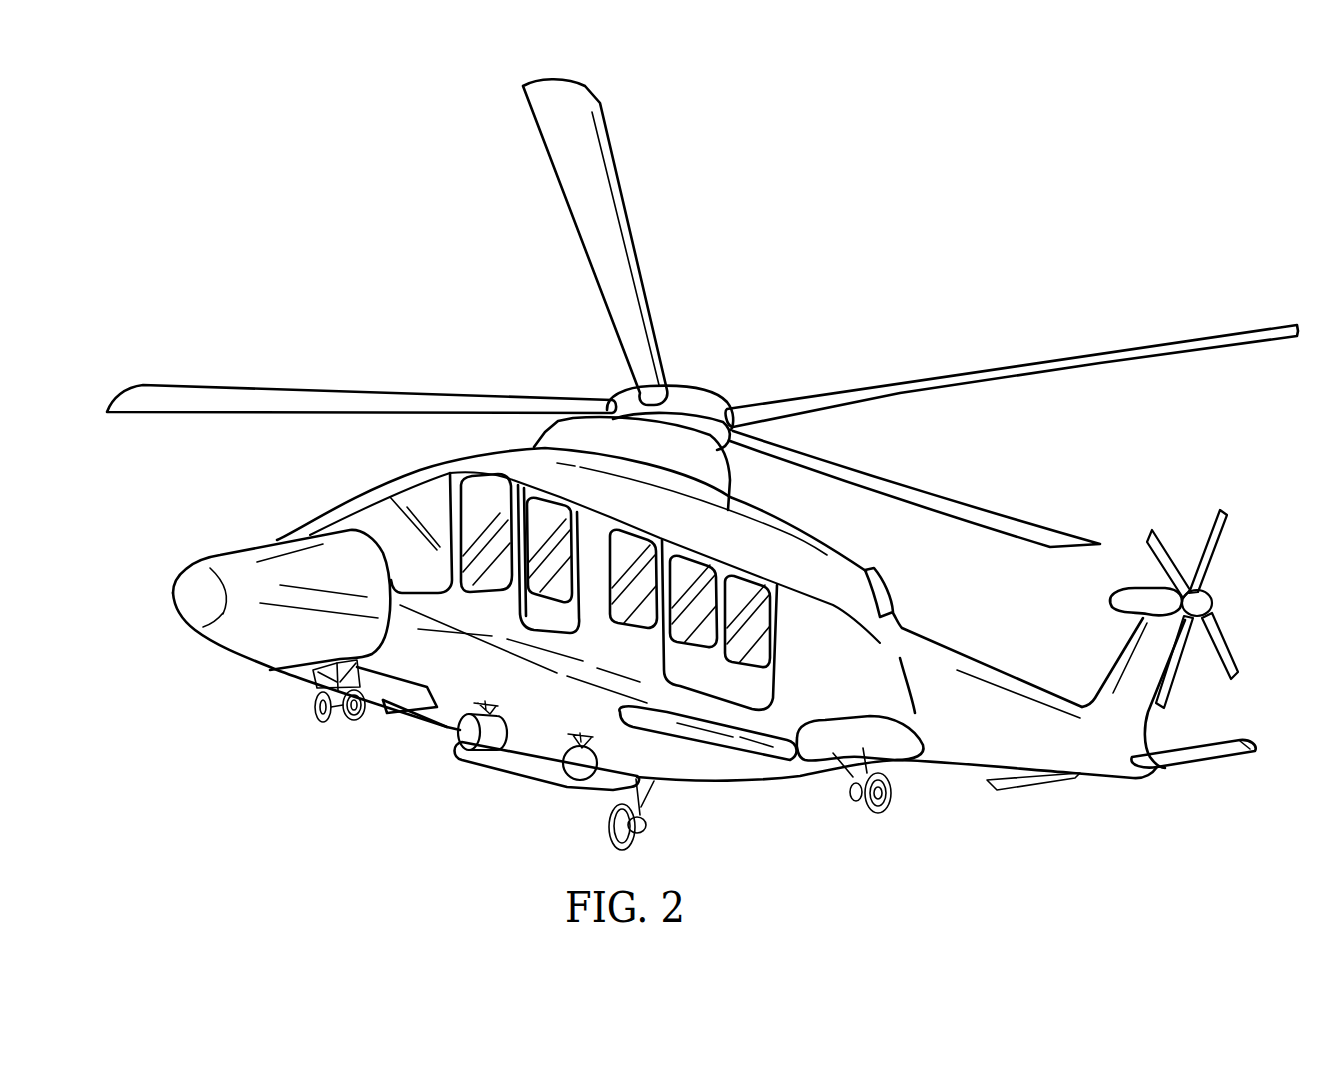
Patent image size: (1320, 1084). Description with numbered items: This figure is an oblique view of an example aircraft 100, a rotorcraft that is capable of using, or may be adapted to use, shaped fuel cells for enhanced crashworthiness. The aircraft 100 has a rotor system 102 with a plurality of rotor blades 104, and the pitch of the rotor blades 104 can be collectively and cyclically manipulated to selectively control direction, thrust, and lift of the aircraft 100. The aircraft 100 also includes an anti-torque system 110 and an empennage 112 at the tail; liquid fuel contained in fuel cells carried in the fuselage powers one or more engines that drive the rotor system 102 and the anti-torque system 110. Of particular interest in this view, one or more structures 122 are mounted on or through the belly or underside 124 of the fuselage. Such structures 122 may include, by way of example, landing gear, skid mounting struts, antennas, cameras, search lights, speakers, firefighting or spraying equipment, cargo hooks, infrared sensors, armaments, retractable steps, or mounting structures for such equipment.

The aircraft 100 is at (330, 173).
The rotor system 102 is at (720, 348).
The rotor blades 104 is at (1005, 382).
The anti-torque system 110 is at (1217, 553).
The empennage 112 is at (957, 745).
The structures 122 is at (503, 722).
The belly or underside 124 is at (446, 718).